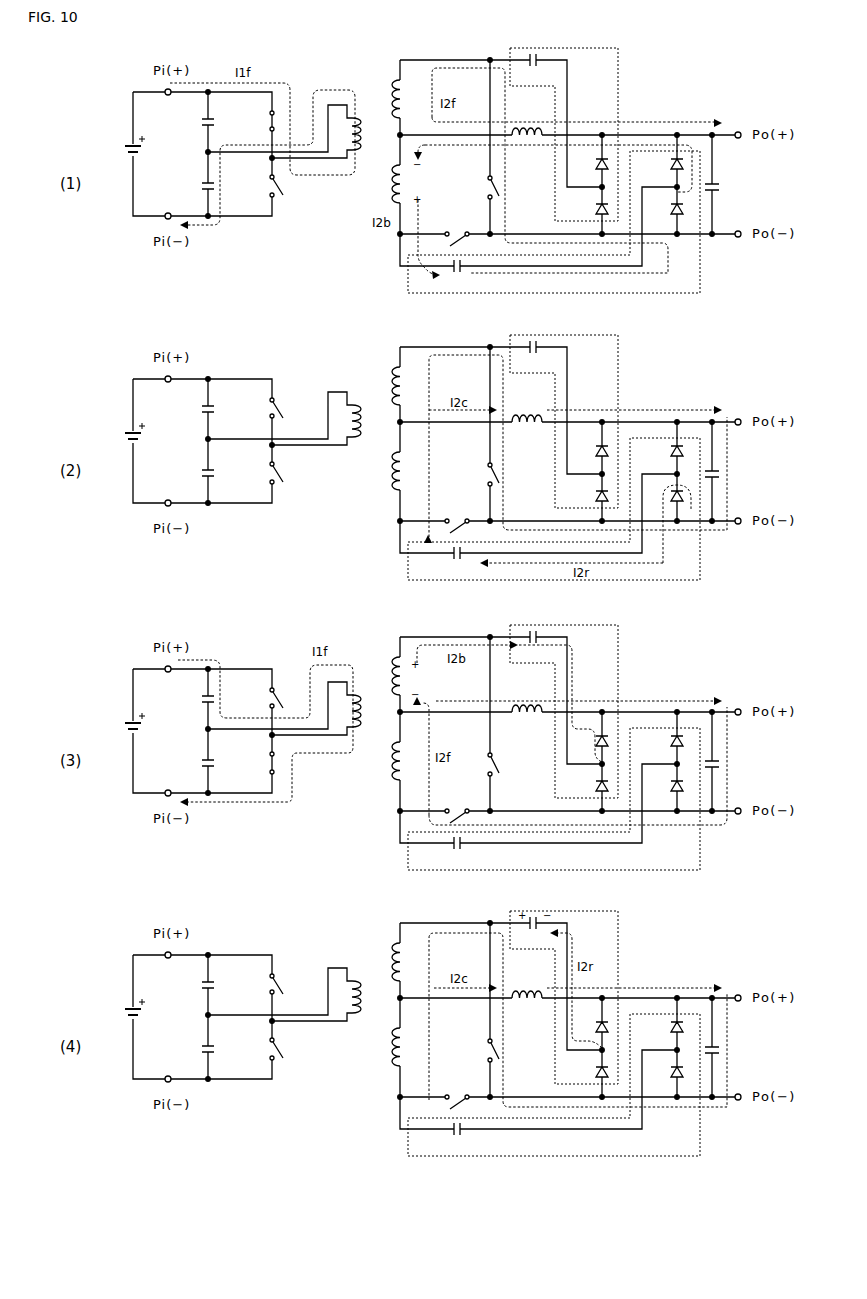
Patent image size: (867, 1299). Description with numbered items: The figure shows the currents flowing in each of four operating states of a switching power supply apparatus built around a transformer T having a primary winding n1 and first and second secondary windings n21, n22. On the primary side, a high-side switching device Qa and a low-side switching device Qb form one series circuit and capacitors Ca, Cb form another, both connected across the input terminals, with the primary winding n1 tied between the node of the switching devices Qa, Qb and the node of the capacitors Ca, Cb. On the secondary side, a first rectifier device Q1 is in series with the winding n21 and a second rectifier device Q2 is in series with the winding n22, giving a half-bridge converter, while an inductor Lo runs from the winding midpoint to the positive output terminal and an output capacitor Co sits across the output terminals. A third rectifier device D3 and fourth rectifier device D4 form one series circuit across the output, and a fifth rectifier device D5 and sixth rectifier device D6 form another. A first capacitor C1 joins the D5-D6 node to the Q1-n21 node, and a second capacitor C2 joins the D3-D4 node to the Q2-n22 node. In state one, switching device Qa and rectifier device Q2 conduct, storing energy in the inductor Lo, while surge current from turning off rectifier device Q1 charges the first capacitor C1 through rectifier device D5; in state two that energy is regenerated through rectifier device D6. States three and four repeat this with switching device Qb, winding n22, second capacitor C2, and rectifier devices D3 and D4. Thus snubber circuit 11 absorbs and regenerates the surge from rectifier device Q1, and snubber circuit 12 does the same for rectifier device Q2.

The snubber circuit 11 is at (700, 268).
The snubber circuit 12 is at (620, 72).
The transformer T is at (380, 554).
The primary winding n1 is at (348, 565).
The first secondary winding n21 is at (409, 615).
The second secondary winding n22 is at (409, 530).
The capacitor Ca is at (197, 553).
The capacitor Cb is at (197, 617).
The high-side switching device Qa is at (259, 552).
The low-side switching device Qb is at (259, 617).
The first rectifier device Q1 is at (457, 662).
The second rectifier device Q2 is at (480, 619).
The first capacitor C1 is at (454, 707).
The second capacitor C2 is at (528, 502).
The inductor Lo is at (527, 553).
The output capacitor Co is at (722, 618).
The third rectifier device D3 is at (666, 599).
The fourth rectifier device D4 is at (666, 642).
The fifth rectifier device D5 is at (590, 599).
The sixth rectifier device D6 is at (590, 642).